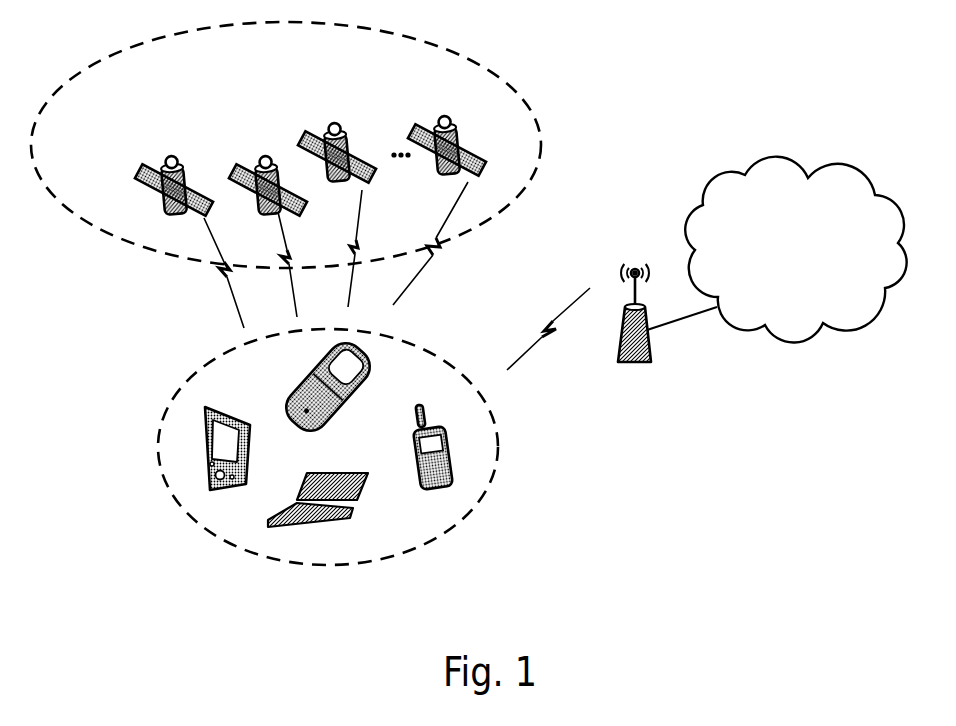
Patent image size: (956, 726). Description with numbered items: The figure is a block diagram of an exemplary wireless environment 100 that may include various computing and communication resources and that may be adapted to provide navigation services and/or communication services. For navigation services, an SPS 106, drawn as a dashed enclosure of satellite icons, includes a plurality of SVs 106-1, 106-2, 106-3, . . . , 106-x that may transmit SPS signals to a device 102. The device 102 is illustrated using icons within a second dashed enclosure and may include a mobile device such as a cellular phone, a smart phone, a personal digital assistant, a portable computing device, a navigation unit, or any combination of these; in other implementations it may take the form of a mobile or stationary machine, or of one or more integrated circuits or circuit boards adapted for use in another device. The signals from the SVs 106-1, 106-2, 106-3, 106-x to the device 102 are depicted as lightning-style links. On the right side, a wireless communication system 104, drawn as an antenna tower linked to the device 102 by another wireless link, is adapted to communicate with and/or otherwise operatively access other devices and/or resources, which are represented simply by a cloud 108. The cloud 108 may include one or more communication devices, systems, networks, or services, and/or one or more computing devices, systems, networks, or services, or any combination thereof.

The wireless environment 100 is at (701, 93).
The device 102 is at (430, 540).
The wireless communication system 104 is at (650, 373).
The SPS 106 is at (143, 250).
The SV 106-1 is at (171, 157).
The SV 106-2 is at (245, 137).
The SV 106-3 is at (330, 123).
The SV 106-x is at (443, 120).
The cloud 108 is at (780, 340).